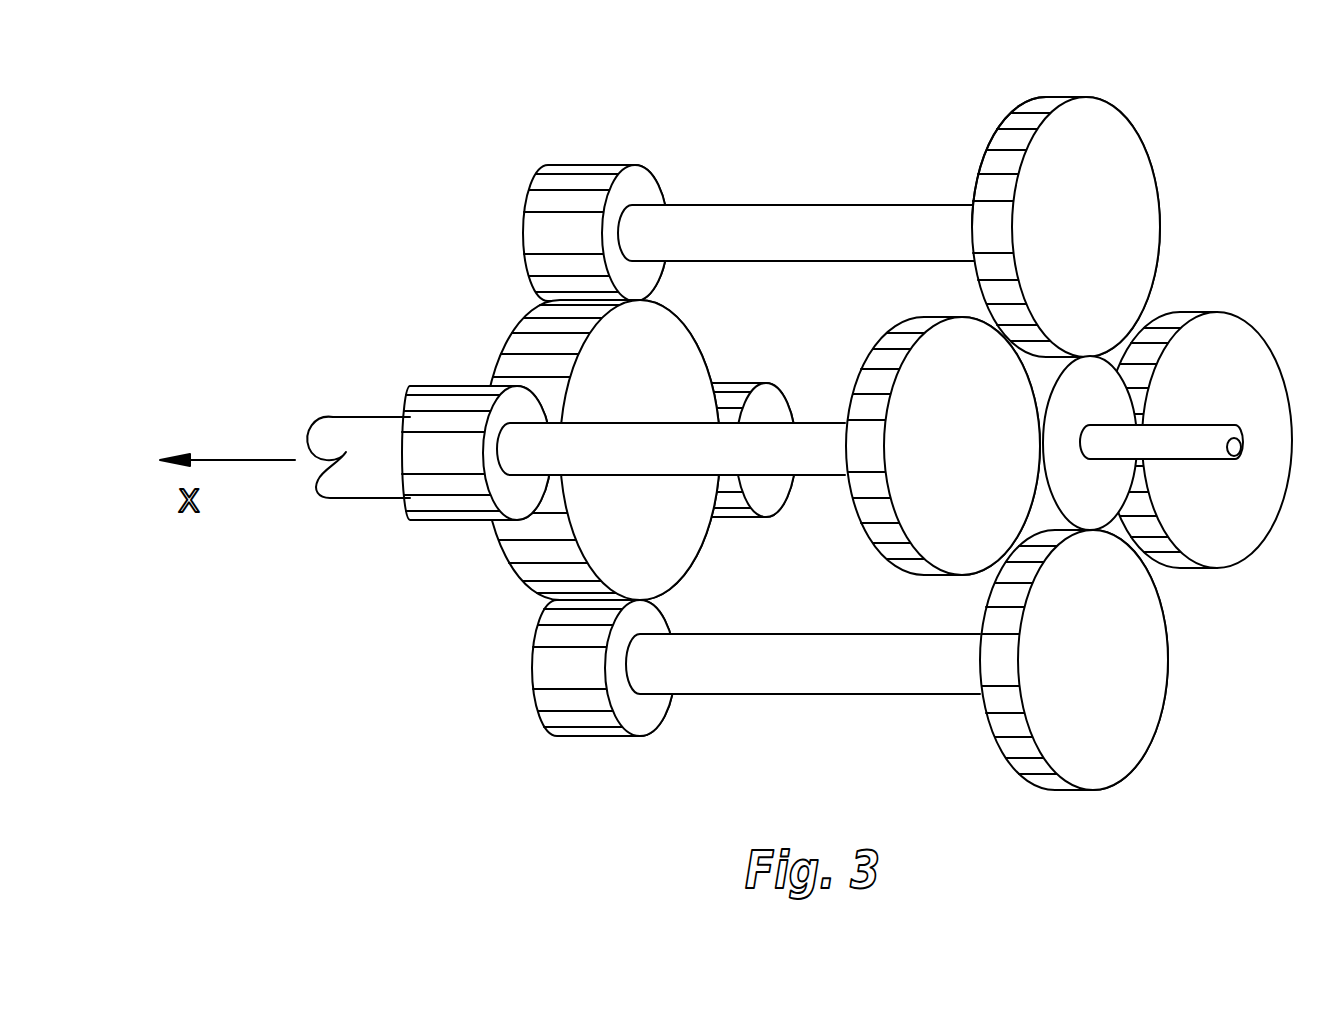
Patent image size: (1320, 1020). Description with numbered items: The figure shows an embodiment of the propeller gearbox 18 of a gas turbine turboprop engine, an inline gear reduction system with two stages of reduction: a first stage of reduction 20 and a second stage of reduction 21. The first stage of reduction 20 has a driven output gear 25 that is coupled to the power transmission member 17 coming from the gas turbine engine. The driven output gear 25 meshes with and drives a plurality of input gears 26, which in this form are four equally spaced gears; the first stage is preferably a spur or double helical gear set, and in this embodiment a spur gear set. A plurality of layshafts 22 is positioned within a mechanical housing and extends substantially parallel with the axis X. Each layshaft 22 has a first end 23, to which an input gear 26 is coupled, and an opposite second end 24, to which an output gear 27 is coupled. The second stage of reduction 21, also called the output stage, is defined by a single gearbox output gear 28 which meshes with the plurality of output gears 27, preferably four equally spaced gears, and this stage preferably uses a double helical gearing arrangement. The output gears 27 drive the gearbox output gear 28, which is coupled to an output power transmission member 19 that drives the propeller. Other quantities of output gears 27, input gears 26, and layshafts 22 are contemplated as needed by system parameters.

The power transmission member 17 is at (1181, 412).
The gearbox 18 is at (1095, 201).
The output power transmission member 19 is at (363, 413).
The first stage of reduction 20 is at (1218, 660).
The second stage of reduction 21 is at (558, 178).
The layshaft 22 is at (808, 214).
The first end 23 is at (965, 212).
The second end 24 is at (563, 198).
The driven output gear 25 is at (1095, 385).
The input gear 26 is at (1113, 165).
The output gear 27 is at (543, 244).
The gearbox output gear 28 is at (597, 490).